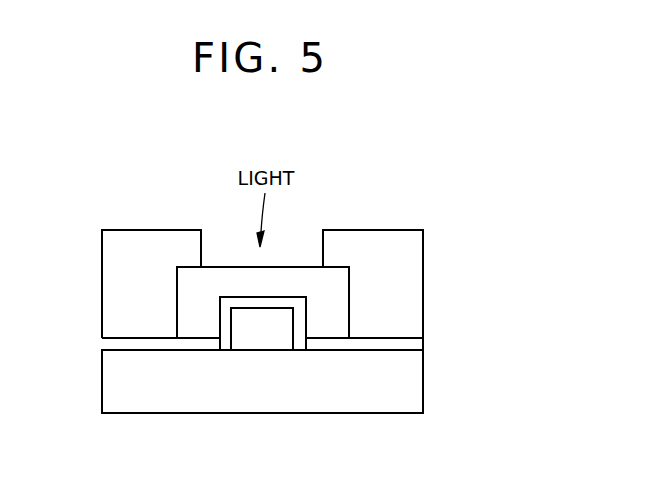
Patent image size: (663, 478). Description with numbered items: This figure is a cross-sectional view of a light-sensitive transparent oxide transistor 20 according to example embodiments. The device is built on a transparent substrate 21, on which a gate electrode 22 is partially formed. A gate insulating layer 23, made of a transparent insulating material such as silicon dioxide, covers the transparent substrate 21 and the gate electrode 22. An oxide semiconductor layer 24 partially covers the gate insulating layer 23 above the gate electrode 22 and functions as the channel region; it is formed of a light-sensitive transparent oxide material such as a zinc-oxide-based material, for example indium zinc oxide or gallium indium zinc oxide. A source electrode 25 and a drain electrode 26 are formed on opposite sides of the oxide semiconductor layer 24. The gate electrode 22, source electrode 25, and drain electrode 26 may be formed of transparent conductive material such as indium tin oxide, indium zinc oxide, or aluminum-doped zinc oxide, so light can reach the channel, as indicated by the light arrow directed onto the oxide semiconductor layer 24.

The light-sensitive transparent oxide transistor 20 is at (486, 209).
The transparent substrate 21 is at (413, 385).
The gate electrode 22 is at (262, 343).
The gate insulating layer 23 is at (413, 345).
The oxide semiconductor layer 24 is at (298, 272).
The source electrode 25 is at (145, 238).
The drain electrode 26 is at (385, 237).